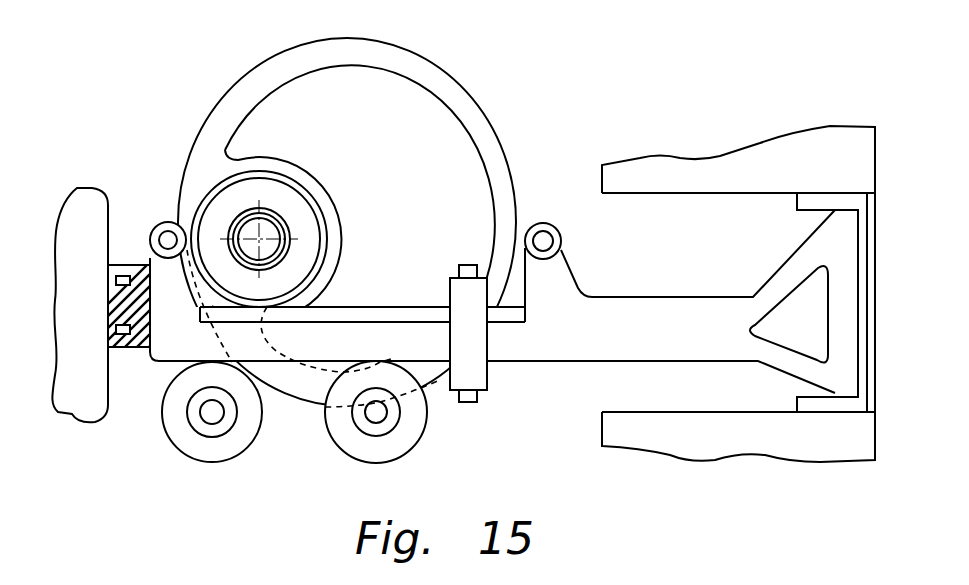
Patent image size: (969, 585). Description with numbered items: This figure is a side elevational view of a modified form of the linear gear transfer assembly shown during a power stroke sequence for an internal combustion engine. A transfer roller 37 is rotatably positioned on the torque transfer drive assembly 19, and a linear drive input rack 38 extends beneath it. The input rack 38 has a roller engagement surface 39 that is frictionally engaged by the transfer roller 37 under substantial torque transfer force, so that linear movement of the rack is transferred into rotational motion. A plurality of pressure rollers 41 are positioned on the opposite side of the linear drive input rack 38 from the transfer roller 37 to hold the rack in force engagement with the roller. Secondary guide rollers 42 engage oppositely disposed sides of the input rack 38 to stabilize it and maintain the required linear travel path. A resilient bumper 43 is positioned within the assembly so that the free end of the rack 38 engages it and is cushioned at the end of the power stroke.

The torque transfer drive assembly 19 is at (288, 226).
The transfer roller 37 is at (290, 177).
The linear drive input rack 38 is at (525, 350).
The roller engagement surface 39 is at (372, 298).
The pressure rollers 41 is at (228, 462).
The secondary guide rollers 42 is at (470, 336).
The resilient bumper 43 is at (137, 348).